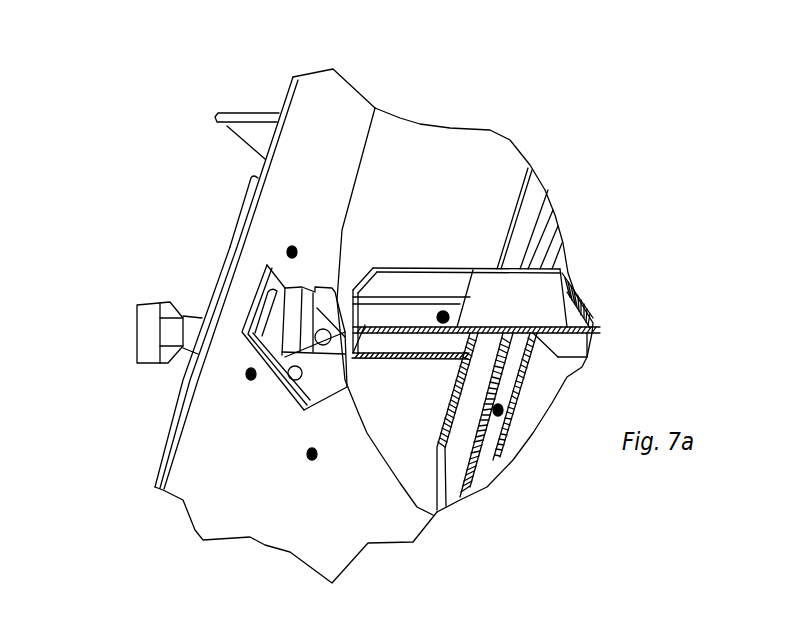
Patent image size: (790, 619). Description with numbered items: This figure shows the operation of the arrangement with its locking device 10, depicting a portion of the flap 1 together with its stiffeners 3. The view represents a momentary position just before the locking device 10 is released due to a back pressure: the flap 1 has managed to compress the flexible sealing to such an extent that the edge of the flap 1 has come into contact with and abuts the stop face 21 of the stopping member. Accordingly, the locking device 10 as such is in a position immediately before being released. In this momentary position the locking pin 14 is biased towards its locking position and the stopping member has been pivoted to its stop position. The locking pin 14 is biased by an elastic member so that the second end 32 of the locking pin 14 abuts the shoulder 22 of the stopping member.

The flap 1 is at (374, 308).
The stiffeners 3 is at (476, 275).
The locking device 10 is at (217, 283).
The locking pin 14 is at (222, 415).
The stop face 21 is at (226, 472).
The shoulder 22 is at (263, 461).
The second end 32 is at (179, 365).